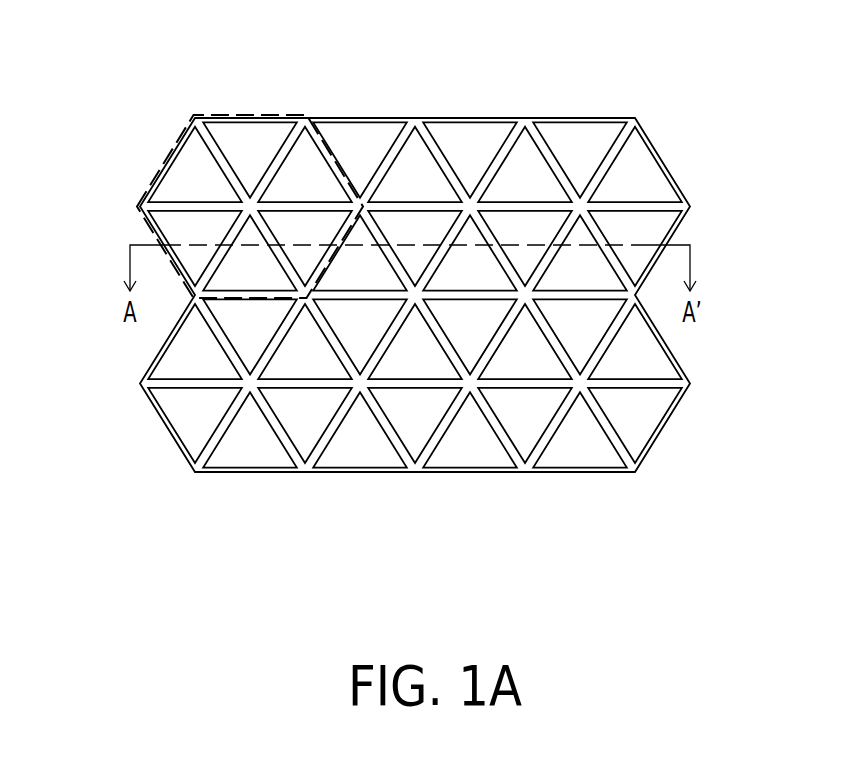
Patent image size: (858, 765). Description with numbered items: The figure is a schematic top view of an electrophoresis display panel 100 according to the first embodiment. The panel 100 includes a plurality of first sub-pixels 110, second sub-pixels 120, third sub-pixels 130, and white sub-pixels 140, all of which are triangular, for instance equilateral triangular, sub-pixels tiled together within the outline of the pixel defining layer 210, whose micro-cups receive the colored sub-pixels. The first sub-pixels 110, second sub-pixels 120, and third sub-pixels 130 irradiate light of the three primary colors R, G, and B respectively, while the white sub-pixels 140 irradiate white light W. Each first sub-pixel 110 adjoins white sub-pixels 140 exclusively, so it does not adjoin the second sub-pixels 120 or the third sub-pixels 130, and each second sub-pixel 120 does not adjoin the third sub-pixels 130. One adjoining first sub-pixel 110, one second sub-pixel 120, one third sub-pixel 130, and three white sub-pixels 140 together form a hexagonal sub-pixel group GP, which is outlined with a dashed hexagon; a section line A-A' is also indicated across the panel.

The electrophoresis display panel 100 is at (465, 300).
The first sub-pixel 110 is at (343, 137).
The second sub-pixel 120 is at (483, 137).
The third sub-pixel 130 is at (595, 135).
The white sub-pixel 140 is at (415, 143).
The pixel defining layer 210 is at (678, 207).
The hexagonal sub-pixel group GP is at (165, 158).